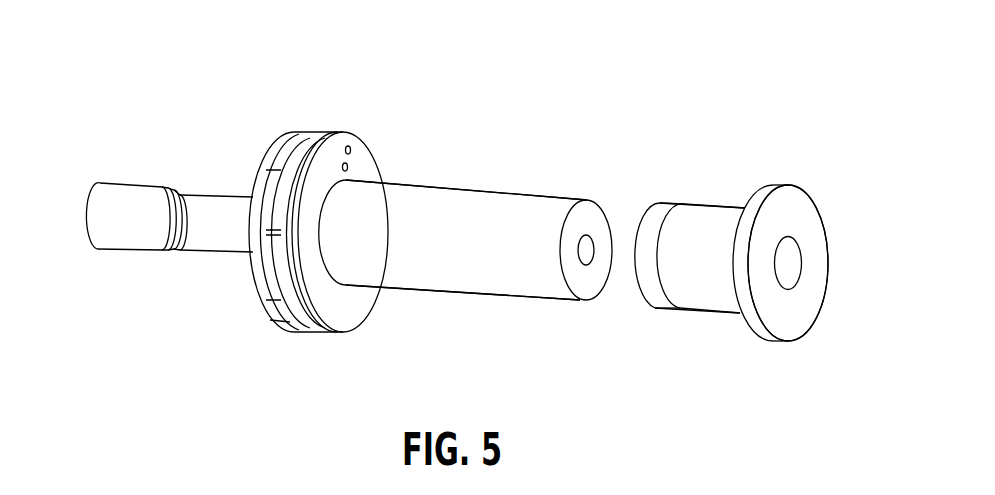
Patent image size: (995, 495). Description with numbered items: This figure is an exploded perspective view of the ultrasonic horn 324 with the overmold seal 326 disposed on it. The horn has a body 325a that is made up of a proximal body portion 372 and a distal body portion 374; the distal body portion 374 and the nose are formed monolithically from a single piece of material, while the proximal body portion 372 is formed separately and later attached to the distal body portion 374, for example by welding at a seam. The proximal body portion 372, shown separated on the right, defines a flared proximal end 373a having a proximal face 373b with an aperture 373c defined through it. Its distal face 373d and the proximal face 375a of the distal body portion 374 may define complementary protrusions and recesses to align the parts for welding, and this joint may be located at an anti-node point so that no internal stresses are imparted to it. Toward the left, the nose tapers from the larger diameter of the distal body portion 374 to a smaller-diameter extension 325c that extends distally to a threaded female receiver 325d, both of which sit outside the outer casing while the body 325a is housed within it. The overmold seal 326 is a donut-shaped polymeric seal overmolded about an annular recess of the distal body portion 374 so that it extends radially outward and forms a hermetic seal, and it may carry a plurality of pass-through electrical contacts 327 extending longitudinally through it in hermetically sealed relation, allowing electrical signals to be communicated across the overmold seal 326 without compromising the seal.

The ultrasonic horn 324 is at (466, 153).
The body 325a is at (619, 174).
The extension 325c is at (222, 235).
The threaded female receiver 325d is at (127, 235).
The overmold seal 326 is at (354, 106).
The pass-through electrical contacts 327 is at (348, 167).
The proximal body portion 372 is at (721, 218).
The flared proximal end 373a is at (786, 187).
The proximal face 373b is at (788, 327).
The aperture 373c is at (790, 265).
The distal face 373d is at (637, 292).
The distal body portion 374 is at (447, 273).
The proximal face 375a is at (578, 285).